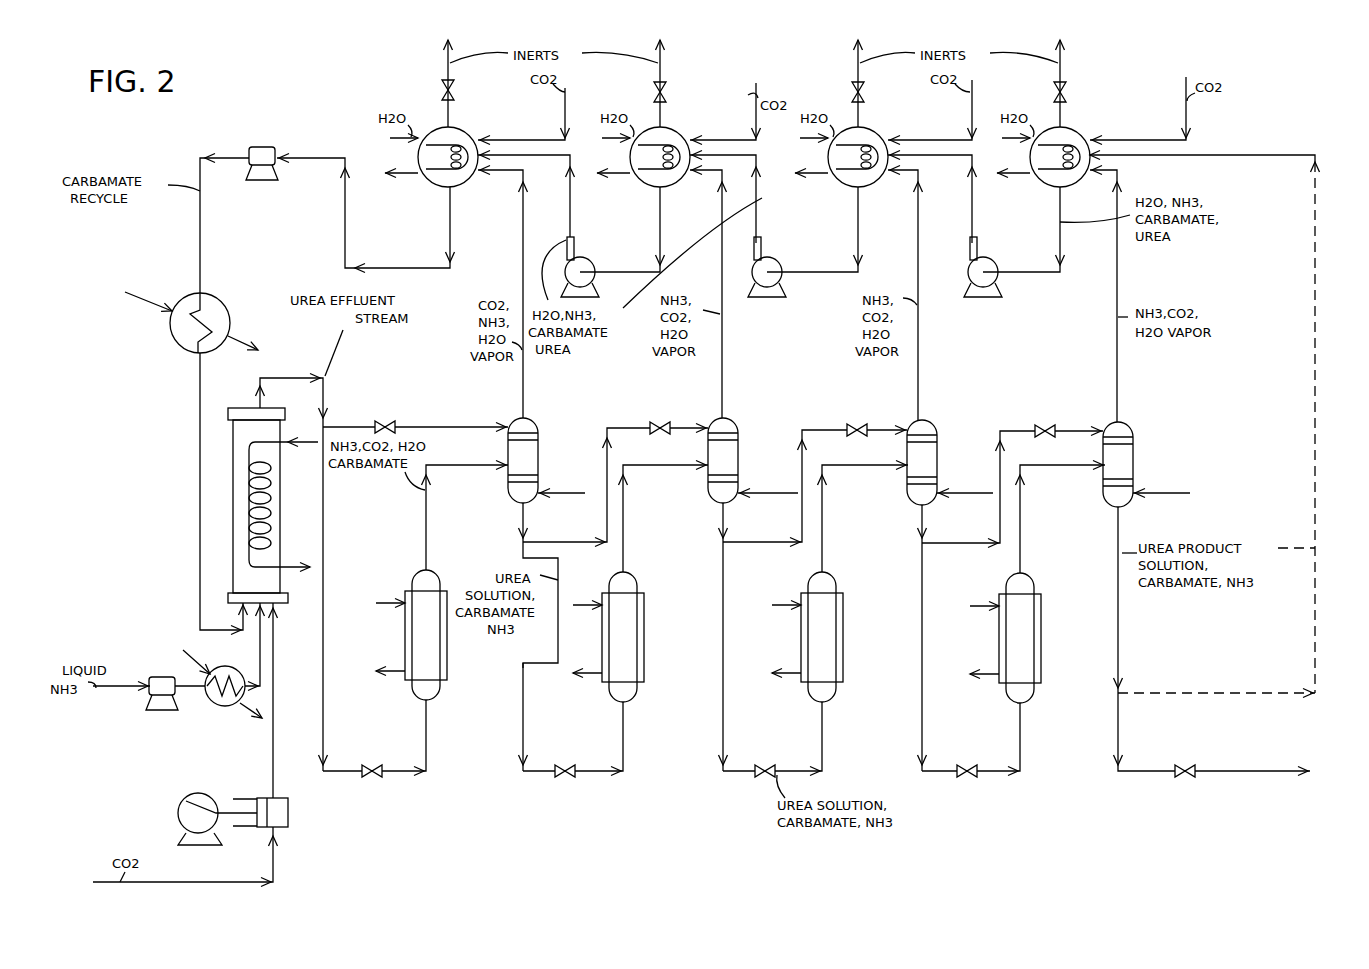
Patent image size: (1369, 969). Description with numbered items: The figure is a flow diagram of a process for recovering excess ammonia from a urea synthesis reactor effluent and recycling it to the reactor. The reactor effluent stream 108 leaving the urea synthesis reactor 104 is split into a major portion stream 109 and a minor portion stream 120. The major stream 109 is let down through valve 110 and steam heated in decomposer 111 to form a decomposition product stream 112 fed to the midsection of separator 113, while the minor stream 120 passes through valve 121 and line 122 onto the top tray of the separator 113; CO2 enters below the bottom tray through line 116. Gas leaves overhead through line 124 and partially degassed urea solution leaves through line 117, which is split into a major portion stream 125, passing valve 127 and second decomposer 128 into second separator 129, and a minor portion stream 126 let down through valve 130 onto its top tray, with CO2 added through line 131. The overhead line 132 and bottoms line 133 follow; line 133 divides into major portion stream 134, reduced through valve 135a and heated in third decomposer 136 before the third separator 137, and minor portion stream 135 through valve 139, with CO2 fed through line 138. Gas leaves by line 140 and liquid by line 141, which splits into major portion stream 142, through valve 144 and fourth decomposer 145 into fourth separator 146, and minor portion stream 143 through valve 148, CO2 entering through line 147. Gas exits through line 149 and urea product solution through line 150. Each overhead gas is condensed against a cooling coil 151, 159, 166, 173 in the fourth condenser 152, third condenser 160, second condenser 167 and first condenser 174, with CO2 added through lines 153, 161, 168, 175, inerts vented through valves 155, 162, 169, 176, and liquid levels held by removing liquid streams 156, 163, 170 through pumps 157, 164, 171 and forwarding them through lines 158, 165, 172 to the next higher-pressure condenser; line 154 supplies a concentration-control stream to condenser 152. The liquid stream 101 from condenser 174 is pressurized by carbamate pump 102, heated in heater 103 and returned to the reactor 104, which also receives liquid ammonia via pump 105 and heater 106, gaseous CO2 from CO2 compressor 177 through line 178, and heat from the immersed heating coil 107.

The liquid stream 101 is at (399, 266).
The carbamate pump 102 is at (264, 146).
The heater 103 is at (175, 343).
The urea synthesis reactor 104 is at (233, 458).
The pump 105 is at (157, 675).
The heater 106 is at (225, 706).
The heating coil 107 is at (248, 522).
The reactor effluent stream 108 is at (287, 377).
The major portion stream 109 is at (325, 524).
The valve 110 is at (372, 782).
The decomposer 111 is at (433, 703).
The decomposition product stream 112 is at (428, 518).
The separator 113 is at (539, 446).
The line 116 is at (561, 490).
The line 117 is at (518, 532).
The minor portion stream 120 is at (346, 420).
The valve 121 is at (390, 418).
The line 122 is at (448, 425).
The line 124 is at (518, 398).
The major portion stream 125 is at (521, 698).
The minor portion stream 126 is at (560, 542).
The valve 127 is at (570, 785).
The second decomposer 128 is at (630, 704).
The second separator 129 is at (743, 440).
The valve 130 is at (663, 418).
The line 131 is at (790, 480).
The line 132 is at (725, 360).
The line 133 is at (721, 525).
The major portion stream 134 is at (722, 660).
The minor portion stream 135 is at (752, 542).
The valve 135a is at (770, 762).
The third decomposer 136 is at (832, 705).
The third separator 137 is at (937, 443).
The line 138 is at (952, 492).
The valve 139 is at (858, 422).
The line 140 is at (920, 348).
The line 141 is at (920, 525).
The major portion stream 142 is at (921, 683).
The minor portion stream 143 is at (955, 543).
The valve 144 is at (967, 783).
The fourth decomposer 145 is at (1034, 704).
The fourth separator 146 is at (1135, 455).
The line 147 is at (1132, 503).
The valve 148 is at (1047, 420).
The line 149 is at (1120, 273).
The line 150 is at (1121, 627).
The coil 151 is at (1035, 186).
The fourth condenser 152 is at (1075, 135).
The line 153 is at (1190, 115).
The line 154 is at (1285, 155).
The valve 155 is at (1048, 92).
The liquid stream 156 is at (1058, 242).
The pump 157 is at (1003, 298).
The line 158 is at (970, 188).
The coil 159 is at (840, 180).
The third condenser 160 is at (878, 130).
The line 161 is at (920, 142).
The valve 162 is at (848, 92).
The liquid stream 163 is at (855, 242).
The pump 164 is at (780, 297).
The line 165 is at (752, 202).
The coil 166 is at (650, 185).
The second condenser 167 is at (684, 125).
The line 168 is at (721, 142).
The valve 169 is at (648, 92).
The liquid stream 170 is at (657, 245).
The pump 171 is at (600, 275).
The line 172 is at (569, 192).
The coil 173 is at (430, 180).
The first condenser 174 is at (468, 128).
The line 175 is at (528, 128).
The valve 176 is at (440, 90).
The CO2 compressor 177 is at (185, 801).
The line 178 is at (270, 762).